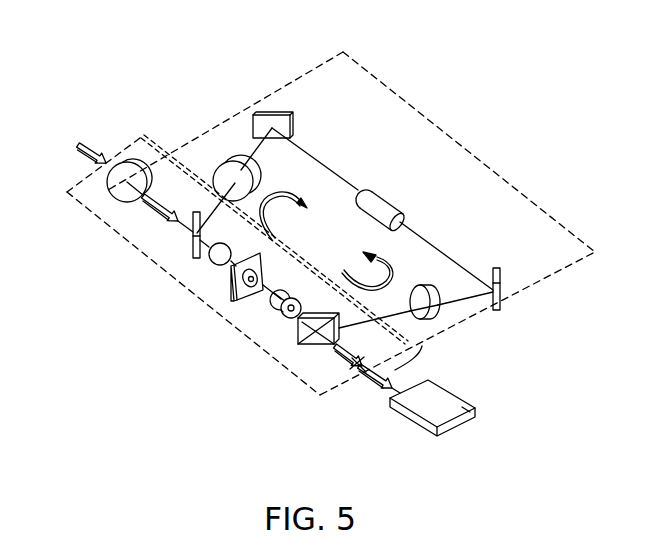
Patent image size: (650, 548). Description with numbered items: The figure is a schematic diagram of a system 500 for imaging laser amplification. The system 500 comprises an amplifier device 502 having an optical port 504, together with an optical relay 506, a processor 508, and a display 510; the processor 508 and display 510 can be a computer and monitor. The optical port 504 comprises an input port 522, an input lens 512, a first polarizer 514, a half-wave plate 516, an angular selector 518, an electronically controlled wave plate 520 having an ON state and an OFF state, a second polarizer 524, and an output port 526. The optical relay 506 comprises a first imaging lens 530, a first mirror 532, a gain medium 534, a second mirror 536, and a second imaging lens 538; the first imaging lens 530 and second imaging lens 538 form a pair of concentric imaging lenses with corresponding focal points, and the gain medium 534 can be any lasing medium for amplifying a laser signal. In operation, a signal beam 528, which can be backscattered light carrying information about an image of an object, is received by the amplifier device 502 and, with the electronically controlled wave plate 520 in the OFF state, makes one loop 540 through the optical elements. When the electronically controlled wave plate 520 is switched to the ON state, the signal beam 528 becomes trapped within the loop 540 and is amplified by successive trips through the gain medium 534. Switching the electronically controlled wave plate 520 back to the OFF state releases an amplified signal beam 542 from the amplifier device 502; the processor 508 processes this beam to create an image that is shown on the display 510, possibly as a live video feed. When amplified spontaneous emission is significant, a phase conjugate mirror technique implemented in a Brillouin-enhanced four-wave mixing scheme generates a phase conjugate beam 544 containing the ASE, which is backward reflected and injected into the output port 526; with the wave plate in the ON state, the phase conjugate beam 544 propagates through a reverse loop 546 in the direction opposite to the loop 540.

The system 500 is at (436, 102).
The amplifier device 502 is at (243, 108).
The optical port 504 is at (93, 203).
The optical relay 506 is at (467, 158).
The processor 508 is at (437, 392).
The display 510 is at (462, 407).
The input lens 512 is at (150, 187).
The first polarizer 514 is at (194, 240).
The half-wave plate 516 is at (208, 262).
The angular selector 518 is at (236, 293).
The electronically controlled wave plate 520 is at (280, 316).
The input port 522 is at (116, 160).
The second polarizer 524 is at (303, 344).
The output port 526 is at (380, 368).
The signal beam 528 is at (80, 148).
The first imaging lens 530 is at (438, 308).
The first mirror 532 is at (502, 290).
The gain medium 534 is at (397, 213).
The second mirror 536 is at (285, 126).
The second imaging lens 538 is at (236, 183).
The loop 540 is at (391, 266).
The amplified signal beam 542 is at (355, 362).
The phase conjugate beam 544 is at (425, 327).
The reverse loop 546 is at (306, 196).